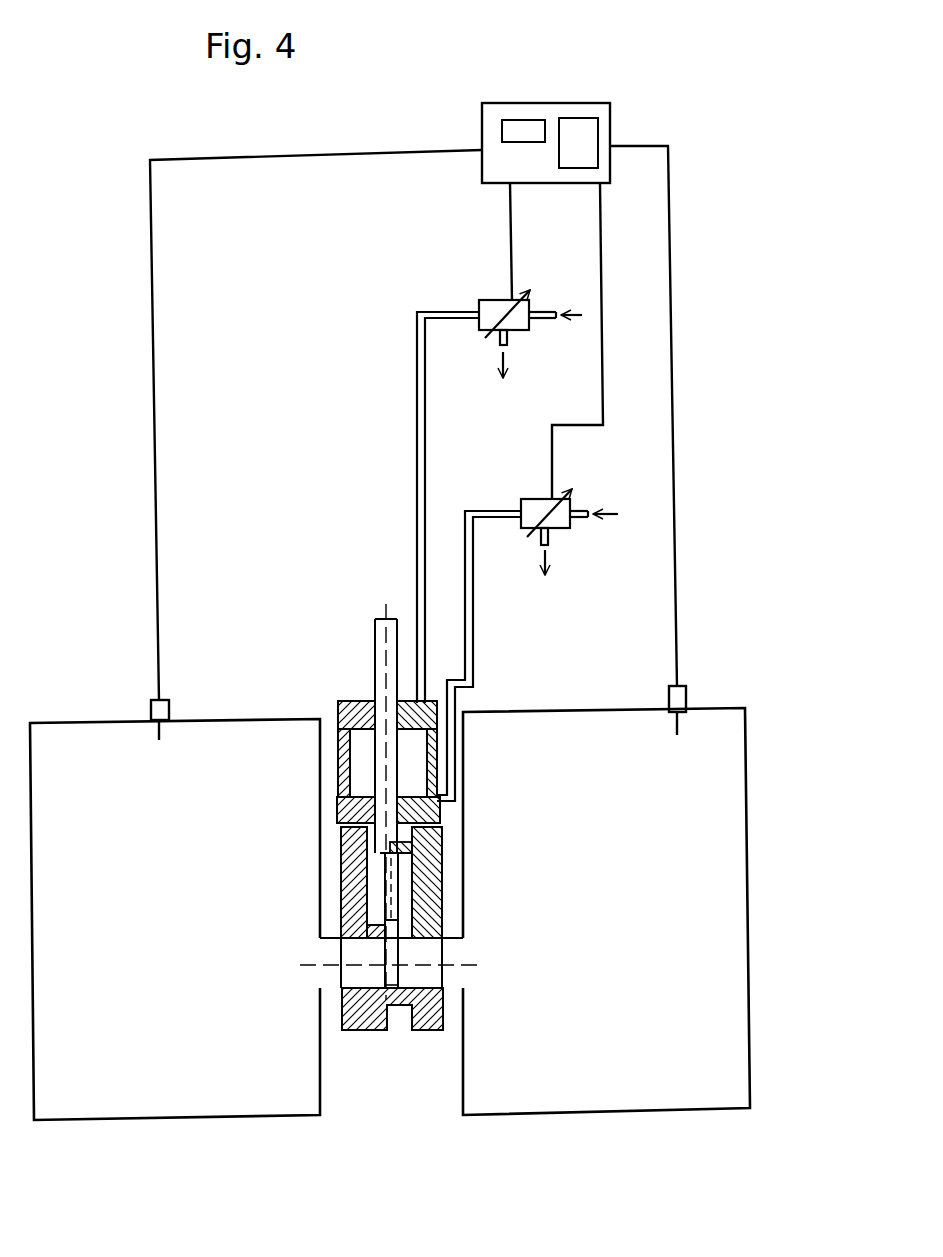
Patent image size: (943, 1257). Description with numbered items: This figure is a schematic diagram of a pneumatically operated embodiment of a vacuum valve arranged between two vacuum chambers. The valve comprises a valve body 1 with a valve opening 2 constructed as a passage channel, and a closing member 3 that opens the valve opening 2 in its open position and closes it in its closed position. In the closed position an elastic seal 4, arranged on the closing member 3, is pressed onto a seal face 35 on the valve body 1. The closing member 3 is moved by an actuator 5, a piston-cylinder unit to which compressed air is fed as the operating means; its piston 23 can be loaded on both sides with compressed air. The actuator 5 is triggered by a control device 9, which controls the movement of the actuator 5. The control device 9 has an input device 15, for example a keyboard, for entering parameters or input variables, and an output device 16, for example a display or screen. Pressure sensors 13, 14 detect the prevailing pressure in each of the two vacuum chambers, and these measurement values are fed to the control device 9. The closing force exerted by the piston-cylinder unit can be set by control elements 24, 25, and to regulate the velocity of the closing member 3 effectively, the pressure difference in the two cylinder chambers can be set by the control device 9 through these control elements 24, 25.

The valve body 1 is at (345, 850).
The valve opening 2 is at (352, 1000).
The closing member 3 is at (382, 880).
The elastic seal 4 is at (400, 910).
The actuator 5 is at (447, 745).
The control device 9 is at (562, 88).
The pressure sensor 13 is at (157, 740).
The pressure sensor 14 is at (680, 722).
The input device 15 is at (581, 138).
The output device 16 is at (516, 127).
The piston 23 is at (334, 701).
The control element 24 is at (538, 332).
The control element 25 is at (584, 496).
The seal face 35 is at (393, 987).